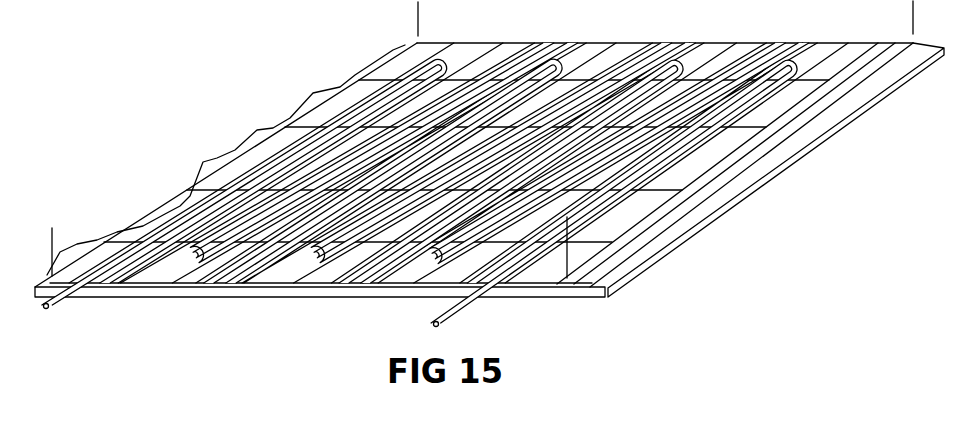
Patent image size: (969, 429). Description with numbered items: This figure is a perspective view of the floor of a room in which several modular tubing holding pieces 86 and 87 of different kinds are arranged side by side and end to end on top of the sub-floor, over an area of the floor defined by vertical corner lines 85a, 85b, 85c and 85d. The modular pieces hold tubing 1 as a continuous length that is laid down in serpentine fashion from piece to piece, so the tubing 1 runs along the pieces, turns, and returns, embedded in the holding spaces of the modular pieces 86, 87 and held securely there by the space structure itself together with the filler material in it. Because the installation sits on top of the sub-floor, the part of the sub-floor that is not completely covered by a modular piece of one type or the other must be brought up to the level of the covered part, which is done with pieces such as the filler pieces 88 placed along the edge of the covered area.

The tubing 1 is at (472, 332).
The vertical corner line 85a is at (48, 270).
The vertical corner line 85b is at (418, 2).
The vertical corner line 85c is at (913, 10).
The plate edge d 85d is at (566, 250).
The modular tubing holding piece 86 is at (700, 194).
The modular tubing holding piece 87 is at (373, 312).
The filler piece 88 is at (693, 282).